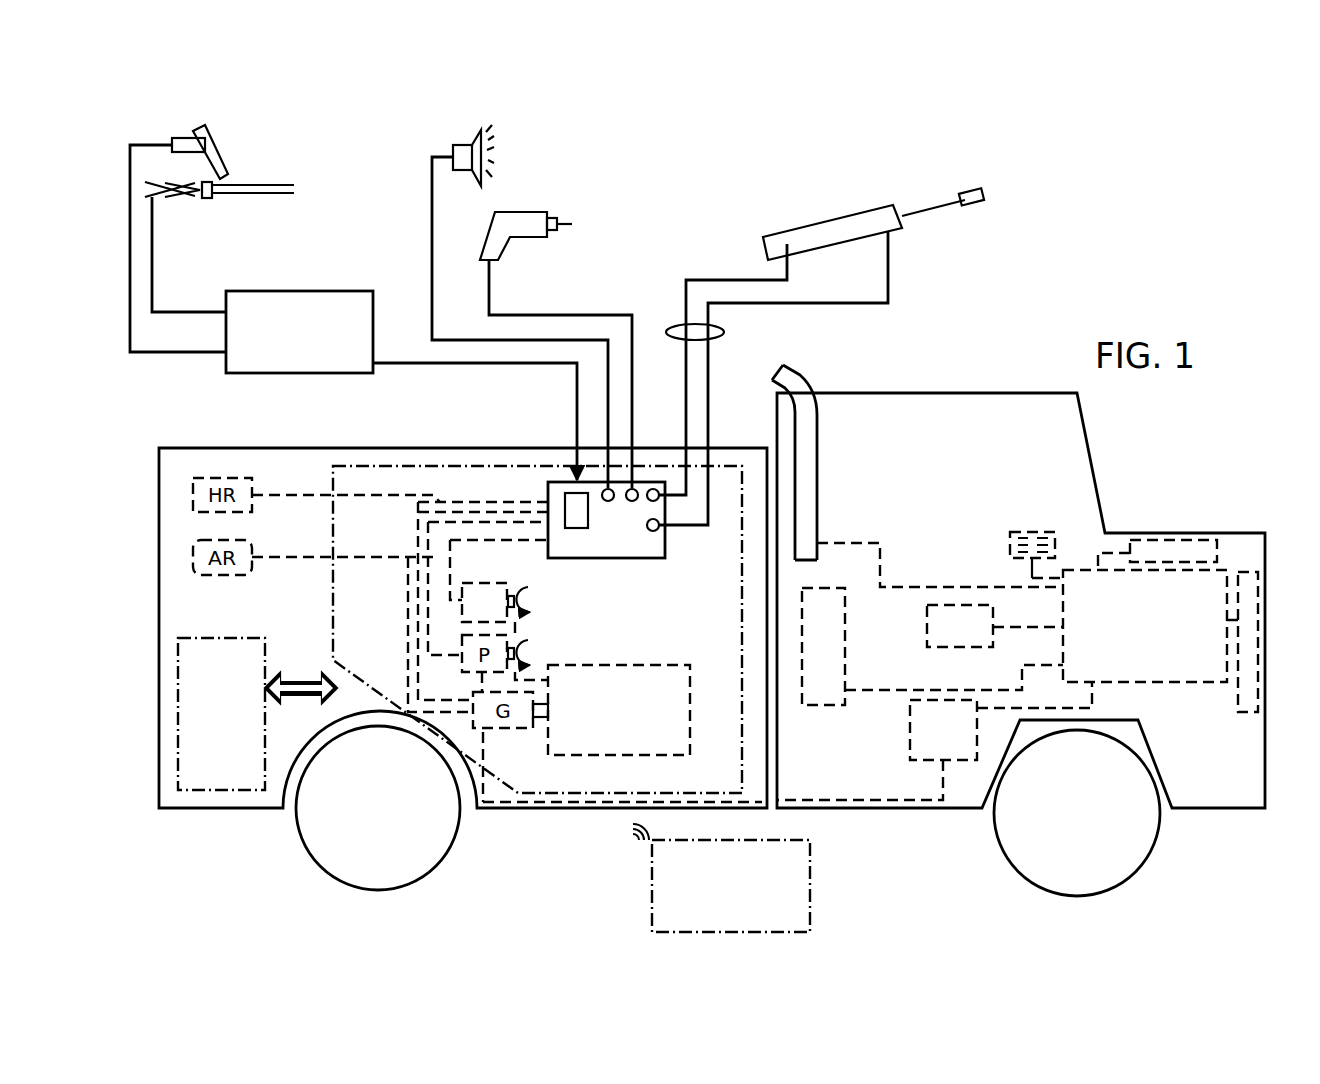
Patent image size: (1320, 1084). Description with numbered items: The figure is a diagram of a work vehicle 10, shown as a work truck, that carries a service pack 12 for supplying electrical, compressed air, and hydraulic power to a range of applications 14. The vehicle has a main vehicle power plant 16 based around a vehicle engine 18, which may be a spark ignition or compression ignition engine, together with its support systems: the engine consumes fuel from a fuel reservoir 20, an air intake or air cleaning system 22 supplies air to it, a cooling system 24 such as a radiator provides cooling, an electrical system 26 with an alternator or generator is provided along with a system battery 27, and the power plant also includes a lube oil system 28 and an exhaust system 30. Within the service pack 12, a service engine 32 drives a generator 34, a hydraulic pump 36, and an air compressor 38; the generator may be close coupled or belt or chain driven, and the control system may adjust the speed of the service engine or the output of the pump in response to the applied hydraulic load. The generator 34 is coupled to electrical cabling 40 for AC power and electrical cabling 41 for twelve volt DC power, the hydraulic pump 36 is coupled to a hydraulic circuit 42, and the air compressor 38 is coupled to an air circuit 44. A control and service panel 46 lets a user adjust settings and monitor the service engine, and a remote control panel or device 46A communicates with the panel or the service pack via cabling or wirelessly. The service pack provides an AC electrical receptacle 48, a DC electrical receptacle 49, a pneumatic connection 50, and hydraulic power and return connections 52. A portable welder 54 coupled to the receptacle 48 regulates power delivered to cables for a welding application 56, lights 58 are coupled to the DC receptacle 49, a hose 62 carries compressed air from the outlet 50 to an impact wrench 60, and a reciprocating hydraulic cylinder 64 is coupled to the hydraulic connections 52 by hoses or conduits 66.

The work vehicle 10 is at (702, 645).
The service pack 12 is at (333, 622).
The applications 14 is at (834, 347).
The main vehicle power plant 16 is at (1118, 470).
The vehicle engine 18 is at (1142, 680).
The fuel reservoir 20 is at (827, 707).
The air intake or air cleaning system 22 is at (1150, 540).
The cooling system 24 is at (1252, 712).
The electrical system 26 is at (1010, 543).
The system battery 27 is at (927, 762).
The lube oil system 28 is at (927, 620).
The exhaust system 30 is at (812, 485).
The service engine 32 is at (603, 663).
The generator 34 is at (502, 732).
The hydraulic pump 36 is at (482, 675).
The air compressor 38 is at (480, 583).
The electrical cabling 40 is at (407, 647).
The electrical cabling 41 is at (422, 685).
The hydraulic circuit 42 is at (427, 603).
The air circuit 44 is at (443, 550).
The control and service panel 46 is at (220, 637).
The remote control panel or device 46A is at (810, 885).
The electrical receptacle 48 is at (562, 495).
The electrical receptacle 49 is at (606, 486).
The pneumatic connection 50 is at (633, 486).
The hydraulic power and return connections 52 is at (656, 500).
The portable welder 54 is at (312, 291).
The welding application 56 is at (272, 183).
The lights 58 is at (458, 143).
The impact wrench 60 is at (525, 212).
The hose 62 is at (560, 315).
The reciprocating hydraulic cylinder 64 is at (833, 218).
The hoses or conduits 66 is at (673, 325).